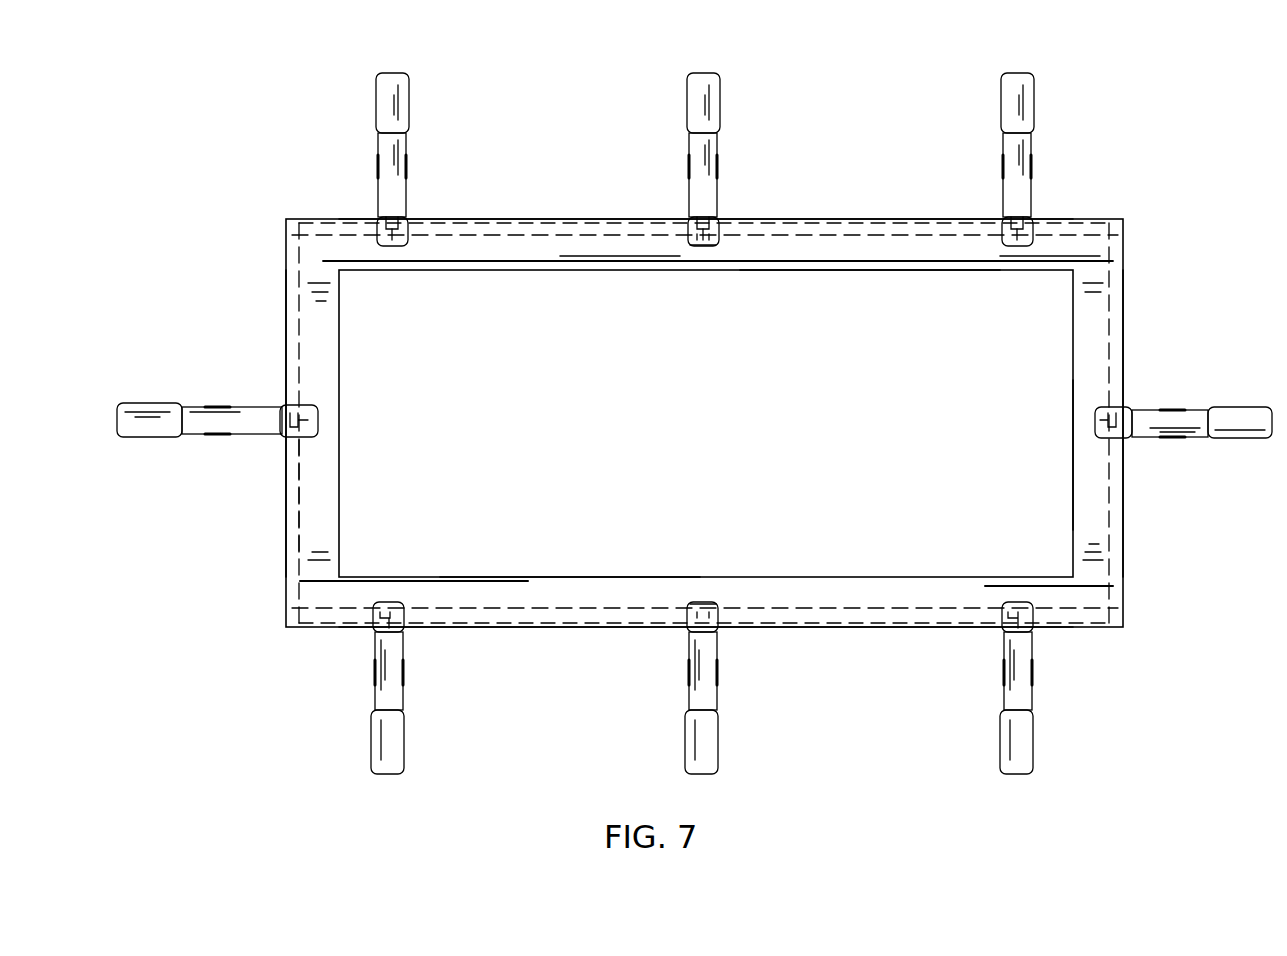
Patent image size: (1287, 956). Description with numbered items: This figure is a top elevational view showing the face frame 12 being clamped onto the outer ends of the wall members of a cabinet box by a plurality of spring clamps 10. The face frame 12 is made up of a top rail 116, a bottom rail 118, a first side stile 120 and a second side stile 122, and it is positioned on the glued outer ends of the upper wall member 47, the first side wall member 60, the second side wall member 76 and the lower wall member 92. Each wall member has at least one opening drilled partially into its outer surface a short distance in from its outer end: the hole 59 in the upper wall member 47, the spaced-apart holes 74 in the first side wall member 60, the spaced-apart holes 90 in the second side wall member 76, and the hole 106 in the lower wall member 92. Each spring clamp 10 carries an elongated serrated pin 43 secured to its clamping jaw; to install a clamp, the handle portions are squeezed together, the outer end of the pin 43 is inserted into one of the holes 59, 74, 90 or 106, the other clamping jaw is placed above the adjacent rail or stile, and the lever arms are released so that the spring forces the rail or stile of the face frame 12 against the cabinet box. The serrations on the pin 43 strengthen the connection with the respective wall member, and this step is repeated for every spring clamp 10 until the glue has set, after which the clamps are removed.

The spring clamp 10 is at (400, 147).
The face frame 12 is at (352, 378).
The pin 43 is at (697, 253).
The upper wall member 47 is at (282, 511).
The hole 59 is at (317, 409).
The first side wall member 60 is at (588, 625).
The holes 74 is at (397, 608).
The second side wall member 76 is at (604, 222).
The holes 90 is at (407, 222).
The lower wall member 92 is at (1132, 513).
The hole 106 is at (1092, 412).
The top rail 116 is at (328, 503).
The bottom rail 118 is at (1073, 455).
The first side stile 120 is at (578, 577).
The second side stile 122 is at (850, 260).